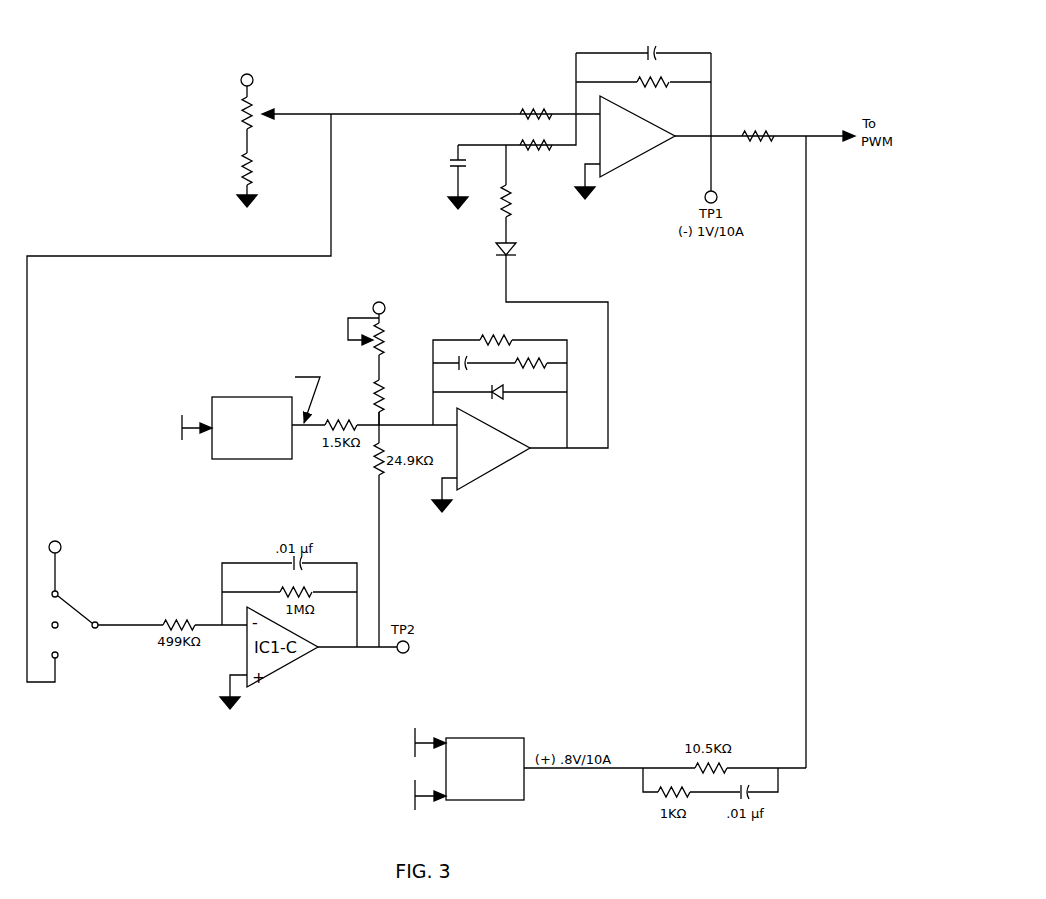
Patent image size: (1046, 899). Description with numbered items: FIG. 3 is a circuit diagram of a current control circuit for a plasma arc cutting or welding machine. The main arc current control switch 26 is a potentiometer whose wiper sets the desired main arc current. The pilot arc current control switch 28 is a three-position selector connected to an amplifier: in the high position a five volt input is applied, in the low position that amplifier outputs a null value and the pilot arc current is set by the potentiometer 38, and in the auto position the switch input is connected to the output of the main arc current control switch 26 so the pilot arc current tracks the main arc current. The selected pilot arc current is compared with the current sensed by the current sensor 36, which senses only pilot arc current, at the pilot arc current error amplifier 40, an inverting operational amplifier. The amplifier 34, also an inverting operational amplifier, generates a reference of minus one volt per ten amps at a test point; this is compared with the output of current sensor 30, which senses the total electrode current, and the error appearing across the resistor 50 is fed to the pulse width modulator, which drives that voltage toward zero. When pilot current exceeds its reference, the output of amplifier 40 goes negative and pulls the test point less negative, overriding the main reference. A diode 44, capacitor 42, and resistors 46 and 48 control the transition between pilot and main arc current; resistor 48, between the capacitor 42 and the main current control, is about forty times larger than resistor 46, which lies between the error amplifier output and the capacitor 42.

The main arc current control switch 26 is at (203, 83).
The pilot arc current control switch 28 is at (88, 565).
The current sensor 30 is at (507, 738).
The amplifier 34 is at (595, 43).
The current sensor 36 is at (248, 458).
The potentiometer 38 is at (345, 318).
The pilot arc current error amplifier 40 is at (508, 473).
The capacitor 42 is at (421, 170).
The diode 44 is at (494, 258).
The resistor 46 is at (548, 209).
The resistor 48 is at (518, 138).
The resistor 50 is at (748, 123).